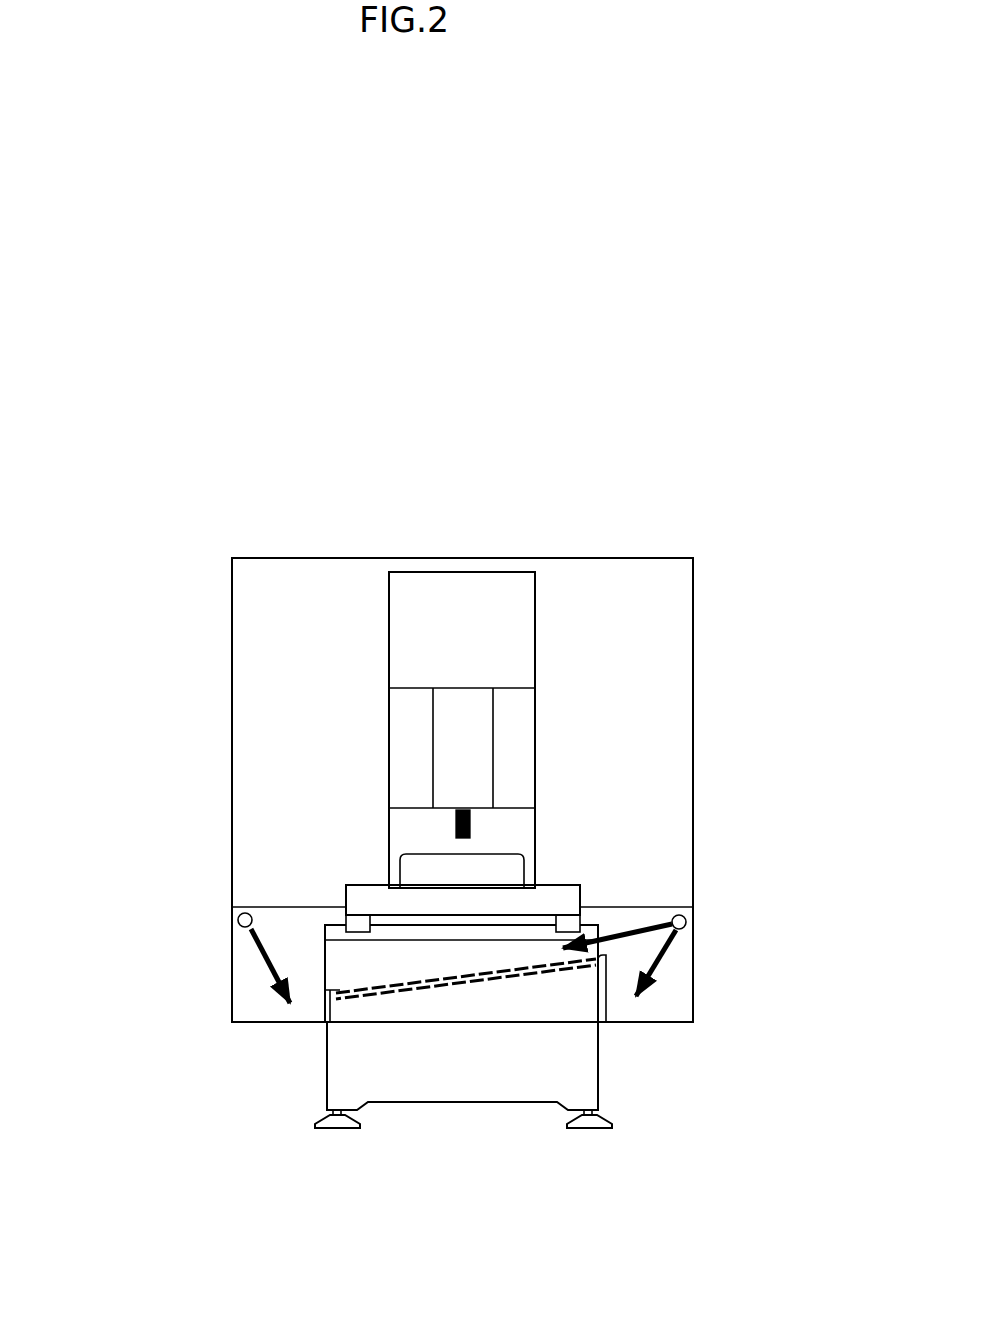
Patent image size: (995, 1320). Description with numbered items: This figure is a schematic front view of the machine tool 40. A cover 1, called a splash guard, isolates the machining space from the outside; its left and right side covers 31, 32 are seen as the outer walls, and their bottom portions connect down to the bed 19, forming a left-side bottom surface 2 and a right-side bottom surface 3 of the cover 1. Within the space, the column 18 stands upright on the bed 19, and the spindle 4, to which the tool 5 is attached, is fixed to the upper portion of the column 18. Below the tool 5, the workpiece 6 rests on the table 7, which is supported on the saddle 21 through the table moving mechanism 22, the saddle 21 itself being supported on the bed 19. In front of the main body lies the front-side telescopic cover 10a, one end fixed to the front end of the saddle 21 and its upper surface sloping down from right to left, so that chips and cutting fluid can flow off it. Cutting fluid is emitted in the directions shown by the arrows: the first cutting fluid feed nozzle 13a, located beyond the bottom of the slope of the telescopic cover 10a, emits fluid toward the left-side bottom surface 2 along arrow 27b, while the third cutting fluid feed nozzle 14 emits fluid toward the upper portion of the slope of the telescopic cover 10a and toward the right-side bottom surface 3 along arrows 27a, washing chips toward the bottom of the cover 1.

The cover 1 is at (694, 597).
The left-side bottom surface 2 is at (275, 1022).
The right-side bottom surface 3 is at (650, 1022).
The spindle 4 is at (460, 705).
The tool 5 is at (455, 823).
The workpiece 6 is at (508, 860).
The table 7 is at (568, 893).
The front-side telescopic cover 10a is at (418, 990).
The first cutting fluid feed nozzle 13a is at (238, 918).
The third cutting fluid feed nozzle 14 is at (693, 908).
The column 18 is at (517, 738).
The bed 19 is at (456, 1078).
The saddle 21 is at (336, 924).
The table moving mechanism 22 is at (572, 922).
The arrow 27a is at (648, 932).
The arrow 27b is at (262, 965).
The side cover 31 is at (231, 633).
The side cover 32 is at (695, 690).
The machine tool 40 is at (478, 345).